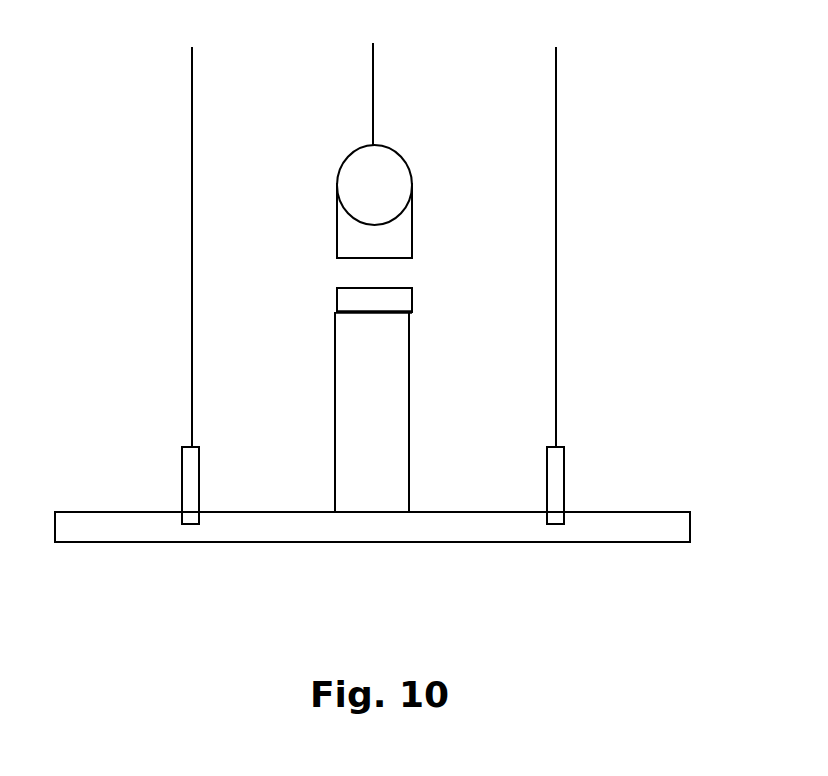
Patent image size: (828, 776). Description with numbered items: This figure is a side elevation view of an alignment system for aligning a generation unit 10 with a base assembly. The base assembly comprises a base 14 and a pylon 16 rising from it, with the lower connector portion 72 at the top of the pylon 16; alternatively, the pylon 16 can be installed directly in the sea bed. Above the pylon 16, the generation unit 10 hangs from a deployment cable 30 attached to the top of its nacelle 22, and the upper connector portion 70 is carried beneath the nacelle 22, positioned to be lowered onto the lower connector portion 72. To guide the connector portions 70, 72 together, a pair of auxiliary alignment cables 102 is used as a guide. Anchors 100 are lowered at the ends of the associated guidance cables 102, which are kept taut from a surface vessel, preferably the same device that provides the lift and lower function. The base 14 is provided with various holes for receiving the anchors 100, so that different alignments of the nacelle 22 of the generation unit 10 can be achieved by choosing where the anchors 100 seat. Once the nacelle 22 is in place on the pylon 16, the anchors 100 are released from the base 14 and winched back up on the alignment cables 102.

The generation unit 10 is at (317, 117).
The base 14 is at (640, 510).
The pylon 16 is at (372, 412).
The nacelle 22 is at (378, 187).
The deployment cable 30 is at (378, 115).
The upper connector portion 70 is at (353, 247).
The lower connector portion 72 is at (353, 303).
The anchors 100 is at (558, 490).
The auxiliary alignment cables 102 is at (187, 215).